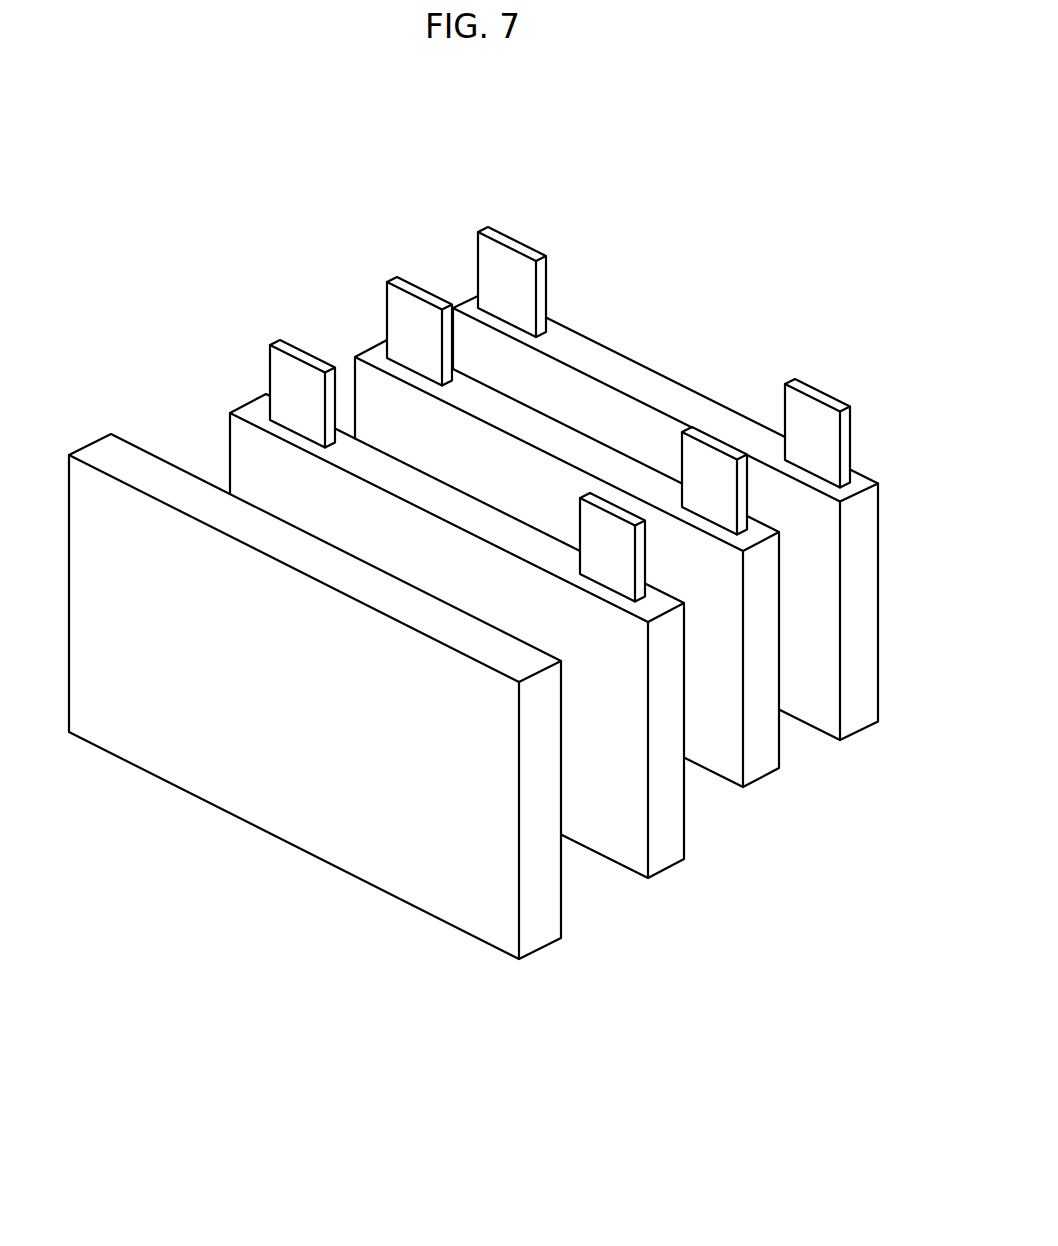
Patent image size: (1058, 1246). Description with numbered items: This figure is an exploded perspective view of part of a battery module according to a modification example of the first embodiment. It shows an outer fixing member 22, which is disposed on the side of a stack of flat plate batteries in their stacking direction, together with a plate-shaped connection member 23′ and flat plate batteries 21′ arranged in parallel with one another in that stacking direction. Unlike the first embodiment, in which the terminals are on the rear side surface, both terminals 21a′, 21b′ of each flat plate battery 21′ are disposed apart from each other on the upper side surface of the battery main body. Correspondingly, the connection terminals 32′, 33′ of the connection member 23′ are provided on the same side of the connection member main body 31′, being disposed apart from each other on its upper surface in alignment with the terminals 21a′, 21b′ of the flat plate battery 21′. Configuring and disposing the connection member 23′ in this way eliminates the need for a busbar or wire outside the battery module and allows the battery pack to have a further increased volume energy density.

The flat plate battery 21′ is at (671, 580).
The terminal 21a′ is at (640, 309).
The terminal 21b′ is at (600, 334).
The outer fixing member 22 is at (457, 910).
The connection member 23′ is at (465, 709).
The connection member main body 31′ is at (572, 640).
The connection terminal 32′ is at (247, 354).
The connection terminal 33′ is at (624, 392).